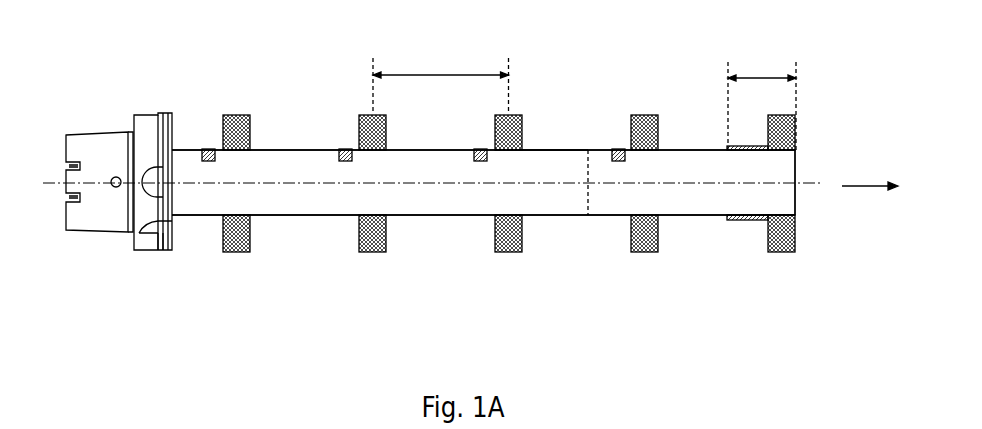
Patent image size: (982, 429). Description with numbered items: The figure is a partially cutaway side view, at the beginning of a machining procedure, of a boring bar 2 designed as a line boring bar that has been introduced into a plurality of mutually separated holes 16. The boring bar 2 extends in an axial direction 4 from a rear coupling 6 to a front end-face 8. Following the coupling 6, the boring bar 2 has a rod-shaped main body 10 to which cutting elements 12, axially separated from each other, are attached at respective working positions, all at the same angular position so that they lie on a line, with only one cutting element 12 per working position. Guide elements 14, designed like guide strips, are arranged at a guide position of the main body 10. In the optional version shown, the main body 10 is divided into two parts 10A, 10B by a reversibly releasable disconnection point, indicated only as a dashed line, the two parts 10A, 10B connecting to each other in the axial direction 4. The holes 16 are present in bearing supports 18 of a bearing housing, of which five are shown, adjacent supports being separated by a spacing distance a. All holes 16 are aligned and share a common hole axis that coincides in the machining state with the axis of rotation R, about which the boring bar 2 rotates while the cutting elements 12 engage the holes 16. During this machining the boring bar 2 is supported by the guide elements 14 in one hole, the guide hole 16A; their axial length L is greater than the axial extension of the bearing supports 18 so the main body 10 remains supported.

The boring bar 2 is at (838, 59).
The axial direction 4 is at (863, 183).
The rear coupling 6 is at (97, 138).
The front end-face 8 is at (797, 200).
The main body 10 is at (425, 205).
The front part of main body 10A is at (668, 203).
The rear part of main body 10B is at (465, 172).
The cutting element 12 is at (208, 148).
The guide element 14 is at (742, 222).
The hole 16 is at (525, 150).
The guide hole 16A is at (797, 218).
The bearing support 18 is at (507, 253).
The axis of rotation R is at (557, 185).
The spacing distance a is at (437, 75).
The axial length L is at (760, 78).